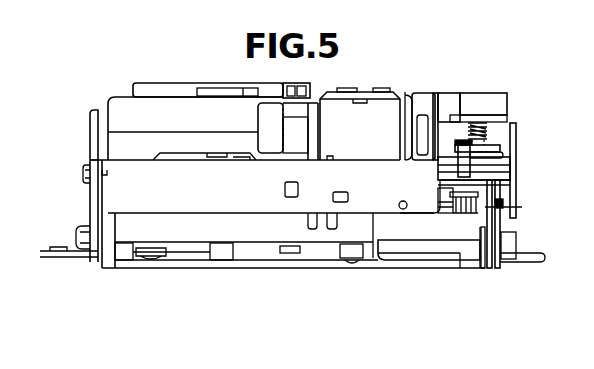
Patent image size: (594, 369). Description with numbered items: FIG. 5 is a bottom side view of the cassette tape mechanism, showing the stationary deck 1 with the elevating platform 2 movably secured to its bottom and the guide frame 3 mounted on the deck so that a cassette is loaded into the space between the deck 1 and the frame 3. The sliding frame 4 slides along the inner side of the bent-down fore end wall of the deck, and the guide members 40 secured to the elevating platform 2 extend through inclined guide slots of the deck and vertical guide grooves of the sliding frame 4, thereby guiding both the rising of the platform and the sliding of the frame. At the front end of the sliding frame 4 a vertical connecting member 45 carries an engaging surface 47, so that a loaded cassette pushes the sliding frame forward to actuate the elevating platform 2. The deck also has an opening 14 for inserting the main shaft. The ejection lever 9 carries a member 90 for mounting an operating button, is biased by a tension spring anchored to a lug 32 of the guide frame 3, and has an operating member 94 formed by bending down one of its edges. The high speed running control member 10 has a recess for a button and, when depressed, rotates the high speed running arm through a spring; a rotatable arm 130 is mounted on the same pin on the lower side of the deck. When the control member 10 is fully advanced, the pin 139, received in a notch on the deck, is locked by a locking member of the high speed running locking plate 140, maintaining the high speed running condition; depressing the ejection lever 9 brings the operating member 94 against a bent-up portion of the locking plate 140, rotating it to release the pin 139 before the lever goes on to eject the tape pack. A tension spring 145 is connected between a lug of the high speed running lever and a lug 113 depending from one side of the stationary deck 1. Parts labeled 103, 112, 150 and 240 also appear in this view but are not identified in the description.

The stationary deck 1 is at (423, 221).
The elevating platform 2 is at (231, 250).
The guide frame 3 is at (84, 129).
The sliding frame 4 is at (487, 275).
The ejection lever 9 is at (418, 87).
The high speed running control member 10 is at (516, 172).
The opening for inserting main shaft 14 is at (440, 172).
The lug of guide frame 32 is at (310, 87).
The guide members 40 is at (76, 233).
The connecting member 45 is at (287, 125).
The engaging surface 47 is at (270, 112).
The member for mounting operating button 90 is at (500, 115).
The operating member 94 is at (433, 105).
The lever bar 103 is at (503, 150).
The mounting plate 112 is at (538, 263).
The lug 113 is at (503, 200).
The rotatable arm 130 is at (510, 181).
The pin 139 is at (470, 145).
The high speed running locking plate 140 is at (517, 158).
The tension spring 145 is at (465, 215).
The block 150 is at (442, 118).
The bolt head 240 is at (84, 173).